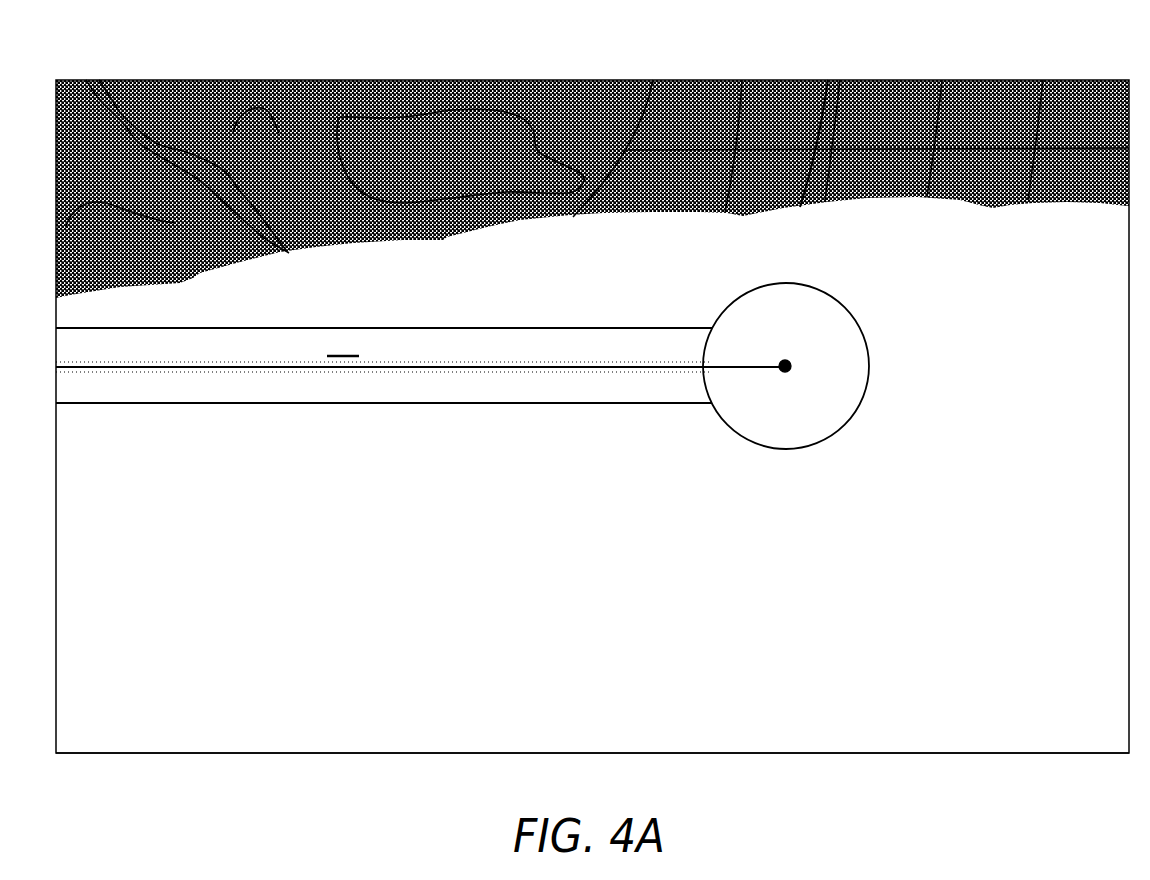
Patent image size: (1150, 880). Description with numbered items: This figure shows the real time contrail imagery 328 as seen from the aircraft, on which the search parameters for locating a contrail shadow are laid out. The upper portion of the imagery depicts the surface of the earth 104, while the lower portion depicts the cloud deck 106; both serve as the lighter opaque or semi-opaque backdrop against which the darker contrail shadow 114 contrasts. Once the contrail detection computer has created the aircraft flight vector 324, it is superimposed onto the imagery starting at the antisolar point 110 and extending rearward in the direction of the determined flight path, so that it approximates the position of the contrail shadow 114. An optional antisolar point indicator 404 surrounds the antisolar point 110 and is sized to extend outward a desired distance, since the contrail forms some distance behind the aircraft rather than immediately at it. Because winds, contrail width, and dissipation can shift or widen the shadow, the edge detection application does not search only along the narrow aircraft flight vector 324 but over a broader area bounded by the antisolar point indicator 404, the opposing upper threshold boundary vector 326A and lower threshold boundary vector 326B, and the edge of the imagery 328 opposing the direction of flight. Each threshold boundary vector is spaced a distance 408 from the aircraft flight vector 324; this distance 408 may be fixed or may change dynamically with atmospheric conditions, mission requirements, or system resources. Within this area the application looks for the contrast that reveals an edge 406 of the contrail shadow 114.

The real time contrail imagery 328 is at (120, 48).
The surface of the earth 104 is at (314, 202).
The cloud deck 106 is at (483, 580).
The contrail shadow 114 is at (193, 385).
The aircraft flight vector 324 is at (303, 367).
The upper threshold boundary vector 326A is at (442, 327).
The lower threshold boundary vector 326B is at (442, 403).
The edge 406 is at (348, 343).
The distance 408 is at (632, 412).
The antisolar point 110 is at (792, 360).
The antisolar point indicator 404 is at (818, 442).